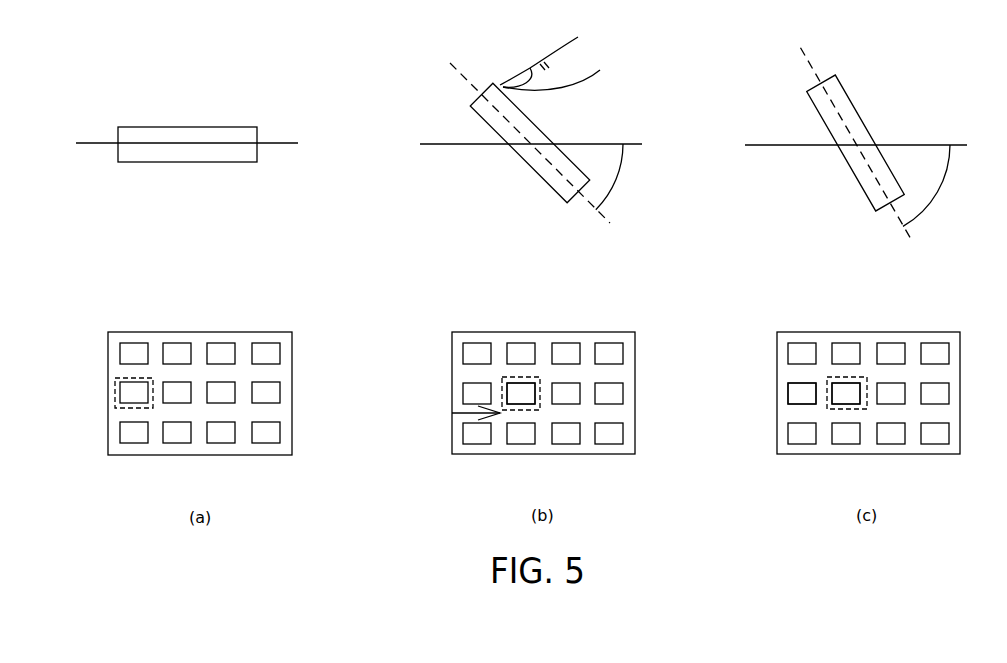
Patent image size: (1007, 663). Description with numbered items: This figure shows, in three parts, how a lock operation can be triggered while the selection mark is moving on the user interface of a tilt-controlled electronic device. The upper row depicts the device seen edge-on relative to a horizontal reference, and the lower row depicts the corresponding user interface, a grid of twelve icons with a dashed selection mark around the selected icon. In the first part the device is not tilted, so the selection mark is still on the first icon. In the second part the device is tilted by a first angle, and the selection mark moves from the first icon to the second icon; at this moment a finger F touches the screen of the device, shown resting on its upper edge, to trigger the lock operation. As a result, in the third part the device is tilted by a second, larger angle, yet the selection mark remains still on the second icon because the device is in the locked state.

The finger F is at (557, 53).